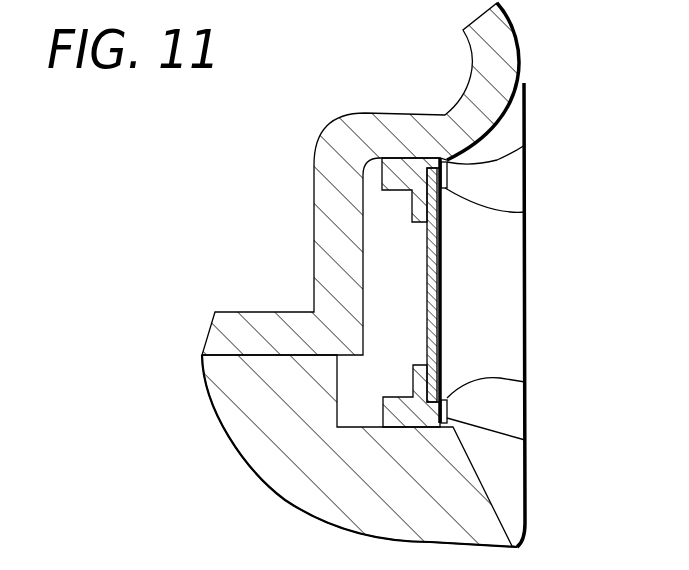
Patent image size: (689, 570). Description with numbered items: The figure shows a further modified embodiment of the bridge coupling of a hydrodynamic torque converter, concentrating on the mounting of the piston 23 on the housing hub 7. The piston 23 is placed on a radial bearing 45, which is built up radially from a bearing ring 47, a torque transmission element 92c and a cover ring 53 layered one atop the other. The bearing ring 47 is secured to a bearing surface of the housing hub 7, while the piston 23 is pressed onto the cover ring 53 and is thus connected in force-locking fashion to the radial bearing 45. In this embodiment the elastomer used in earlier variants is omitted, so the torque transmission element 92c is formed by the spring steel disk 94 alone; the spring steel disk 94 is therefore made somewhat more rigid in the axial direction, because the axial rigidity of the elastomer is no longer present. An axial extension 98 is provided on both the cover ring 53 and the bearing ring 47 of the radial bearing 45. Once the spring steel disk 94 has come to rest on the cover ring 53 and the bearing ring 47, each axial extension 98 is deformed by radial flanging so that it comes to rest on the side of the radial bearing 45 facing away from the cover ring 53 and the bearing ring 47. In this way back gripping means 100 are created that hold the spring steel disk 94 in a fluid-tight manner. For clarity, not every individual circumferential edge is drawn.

The piston 23 is at (401, 113).
The cover ring 53 is at (395, 181).
The radial bearing 45 is at (430, 255).
The torque transmission element 92c is at (442, 268).
The spring steel disk 94 is at (500, 335).
The axial extension 98 is at (525, 145).
The back gripping means 100 is at (525, 212).
The bearing ring 47 is at (403, 417).
The housing hub 7 is at (470, 510).